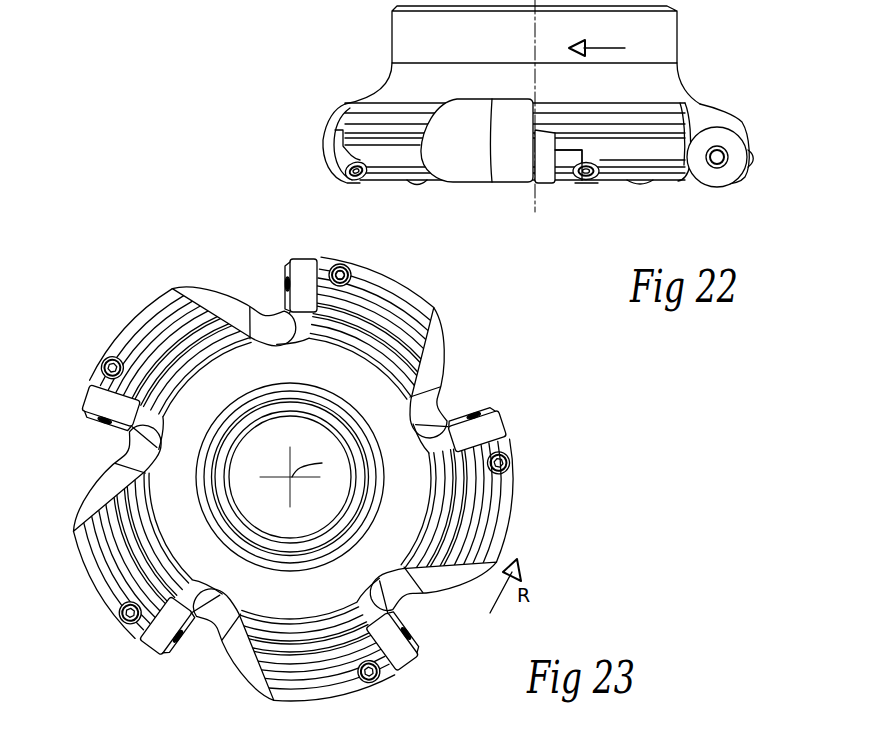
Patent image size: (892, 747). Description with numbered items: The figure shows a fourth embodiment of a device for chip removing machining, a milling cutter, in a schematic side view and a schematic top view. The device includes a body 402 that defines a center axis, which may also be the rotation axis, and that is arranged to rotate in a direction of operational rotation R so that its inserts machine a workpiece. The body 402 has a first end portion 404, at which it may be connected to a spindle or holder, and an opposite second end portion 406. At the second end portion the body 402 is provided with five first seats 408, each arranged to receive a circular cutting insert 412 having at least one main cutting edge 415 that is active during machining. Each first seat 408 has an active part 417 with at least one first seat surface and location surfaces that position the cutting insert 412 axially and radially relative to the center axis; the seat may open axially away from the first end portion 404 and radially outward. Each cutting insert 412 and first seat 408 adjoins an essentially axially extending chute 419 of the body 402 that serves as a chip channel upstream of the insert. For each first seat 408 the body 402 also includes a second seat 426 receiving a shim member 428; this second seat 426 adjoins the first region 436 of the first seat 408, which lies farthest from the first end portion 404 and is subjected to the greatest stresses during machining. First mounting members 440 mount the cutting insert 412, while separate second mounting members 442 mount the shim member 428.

In FIG. 22, the body 402 is at (665, 34).
In FIG. 23, the body 402 is at (148, 314).
In FIG. 22, the first end portion 404 is at (386, 50).
In FIG. 22, the second end portion 406 is at (308, 163).
In FIG. 22, the first seat 408 is at (568, 240).
In FIG. 23, the first seat 408 is at (346, 262).
In FIG. 22, the cutting insert 412 is at (338, 140).
In FIG. 23, the cutting insert 412 is at (306, 262).
In FIG. 22, the main cutting edge 415 is at (324, 180).
In FIG. 22, the active part 417 is at (453, 145).
In FIG. 23, the active part 417 is at (204, 484).
In FIG. 23, the chute 419 is at (463, 374).
In FIG. 22, the second seat 426 is at (591, 152).
In FIG. 23, the second seat 426 is at (343, 292).
In FIG. 22, the shim member 428 is at (568, 148).
In FIG. 23, the shim member 428 is at (327, 296).
In FIG. 22, the first region 436 is at (716, 190).
In FIG. 22, the first mounting members 440 is at (718, 150).
In FIG. 22, the second mounting members 442 is at (590, 186).
In FIG. 23, the second mounting members 442 is at (500, 486).